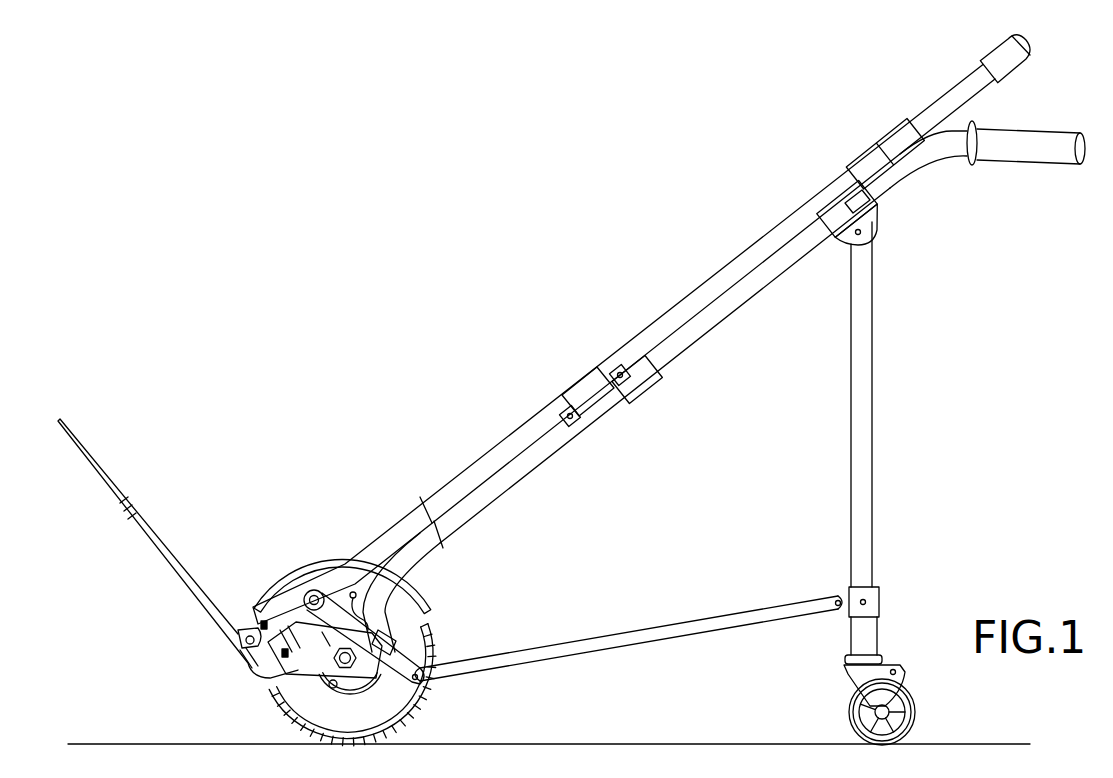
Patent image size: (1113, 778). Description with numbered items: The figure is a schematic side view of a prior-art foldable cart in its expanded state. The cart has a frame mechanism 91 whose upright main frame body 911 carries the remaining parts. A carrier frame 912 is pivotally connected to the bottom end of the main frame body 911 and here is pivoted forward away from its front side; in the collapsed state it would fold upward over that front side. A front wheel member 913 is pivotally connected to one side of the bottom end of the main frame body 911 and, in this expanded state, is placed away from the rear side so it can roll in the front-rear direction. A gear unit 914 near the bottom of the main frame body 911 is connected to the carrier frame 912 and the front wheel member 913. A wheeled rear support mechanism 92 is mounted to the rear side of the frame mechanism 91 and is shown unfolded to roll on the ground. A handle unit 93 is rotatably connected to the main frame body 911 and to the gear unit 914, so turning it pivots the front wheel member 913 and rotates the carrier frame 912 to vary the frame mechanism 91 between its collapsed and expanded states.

The frame mechanism 91 is at (937, 89).
The main frame body 911 is at (898, 126).
The carrier frame 912 is at (190, 584).
The front wheel member 913 is at (331, 553).
The gear unit 914 is at (252, 638).
The wheeled rear support mechanism 92 is at (891, 298).
The handle unit 93 is at (1037, 147).